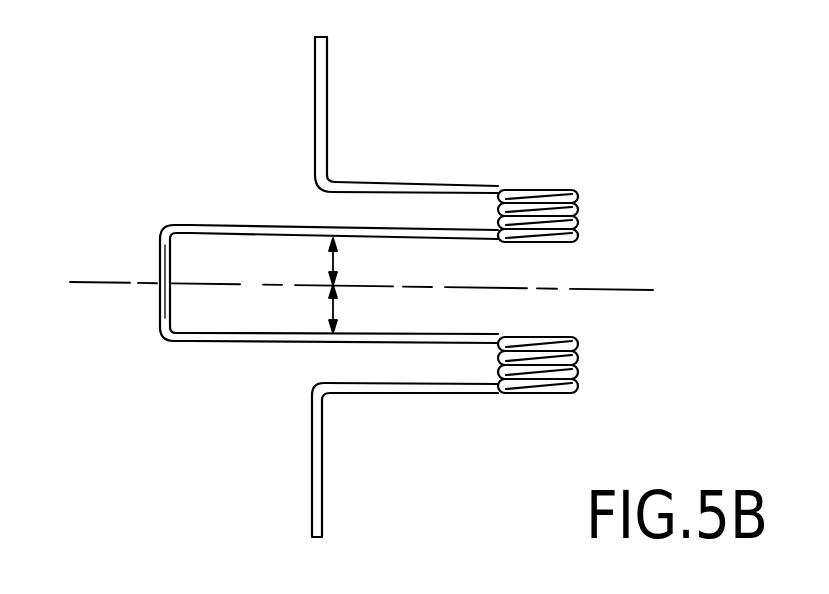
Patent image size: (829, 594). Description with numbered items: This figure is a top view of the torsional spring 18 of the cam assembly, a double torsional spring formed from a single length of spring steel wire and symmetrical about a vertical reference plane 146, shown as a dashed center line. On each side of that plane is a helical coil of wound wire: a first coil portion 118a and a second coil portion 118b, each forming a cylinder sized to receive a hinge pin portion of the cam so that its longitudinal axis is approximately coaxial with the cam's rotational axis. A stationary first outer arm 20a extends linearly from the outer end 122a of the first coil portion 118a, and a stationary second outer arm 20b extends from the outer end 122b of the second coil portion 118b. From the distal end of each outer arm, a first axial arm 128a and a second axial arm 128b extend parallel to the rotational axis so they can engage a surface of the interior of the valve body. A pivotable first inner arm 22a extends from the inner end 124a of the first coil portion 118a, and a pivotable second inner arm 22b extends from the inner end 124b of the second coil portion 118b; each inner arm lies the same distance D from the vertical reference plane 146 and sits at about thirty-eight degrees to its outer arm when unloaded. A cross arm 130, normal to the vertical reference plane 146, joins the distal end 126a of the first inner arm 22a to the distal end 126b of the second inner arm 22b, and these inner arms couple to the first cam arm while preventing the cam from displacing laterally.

The torsional spring 18 is at (478, 122).
The first outer arm 20a is at (397, 187).
The second outer arm 20b is at (391, 397).
The first inner arm 22a is at (250, 226).
The second inner arm 22b is at (262, 343).
The first coil portion 118a is at (577, 213).
The second coil portion 118b is at (577, 368).
The outer end of the first coil portion 122a is at (577, 191).
The outer end of the second coil portion 122b is at (577, 390).
The inner end of the first coil portion 124a is at (577, 237).
The inner end of the second coil portion 124b is at (577, 343).
The distal end of the first inner arm 126a is at (187, 226).
The distal end of the second inner arm 126b is at (188, 343).
The first axial arm 128a is at (315, 77).
The second axial arm 128b is at (322, 513).
The cross arm 130 is at (157, 273).
The vertical reference plane 146 is at (628, 289).